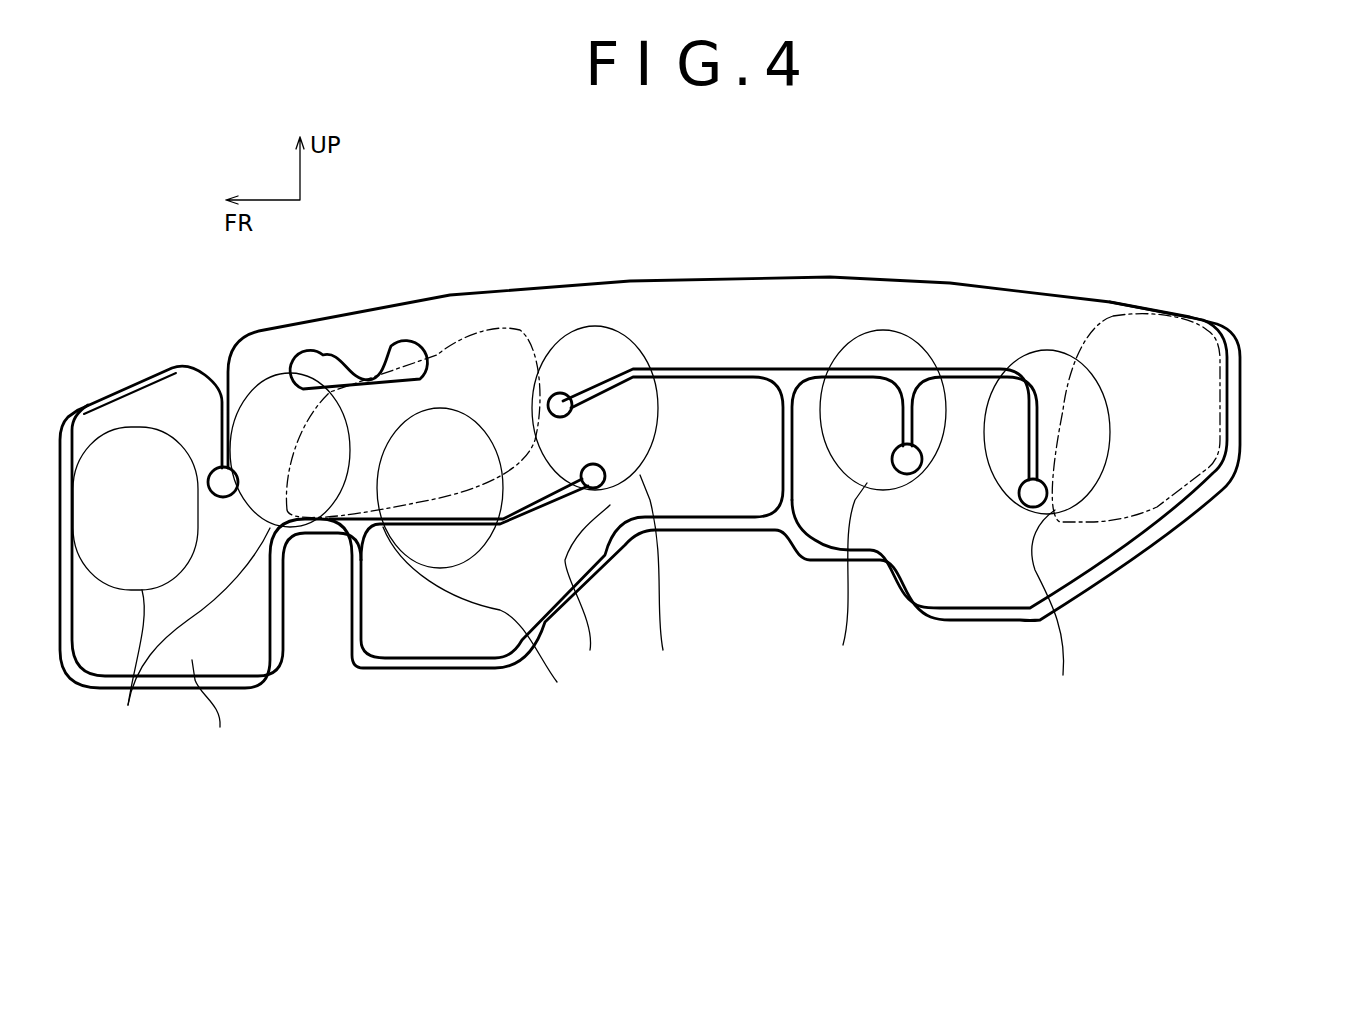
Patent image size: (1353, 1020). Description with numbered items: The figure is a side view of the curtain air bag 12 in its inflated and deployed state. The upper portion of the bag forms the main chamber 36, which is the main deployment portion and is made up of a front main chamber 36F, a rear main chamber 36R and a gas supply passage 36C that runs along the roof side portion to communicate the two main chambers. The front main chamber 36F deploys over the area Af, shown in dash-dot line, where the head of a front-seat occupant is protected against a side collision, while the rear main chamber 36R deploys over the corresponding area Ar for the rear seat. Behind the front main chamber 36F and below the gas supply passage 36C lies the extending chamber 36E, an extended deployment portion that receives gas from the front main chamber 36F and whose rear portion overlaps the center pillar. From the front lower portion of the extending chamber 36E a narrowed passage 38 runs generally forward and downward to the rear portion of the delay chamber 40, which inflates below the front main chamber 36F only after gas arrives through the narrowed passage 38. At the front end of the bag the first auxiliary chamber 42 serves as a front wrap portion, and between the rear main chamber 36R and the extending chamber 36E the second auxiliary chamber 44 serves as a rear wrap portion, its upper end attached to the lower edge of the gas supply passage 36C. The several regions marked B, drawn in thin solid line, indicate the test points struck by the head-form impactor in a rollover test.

The curtain air bag 12 is at (1161, 271).
The main chamber 36 is at (1013, 188).
The front main chamber 36F is at (513, 377).
The extending chamber 36E is at (722, 423).
The gas supply passage 36C is at (850, 297).
The rear main chamber 36R is at (1143, 377).
The narrowed passage 38 is at (588, 589).
The delay chamber 40 is at (473, 630).
The first auxiliary chamber 42 is at (216, 586).
The second auxiliary chamber 44 is at (967, 557).
The region B is at (596, 611).
The area Af is at (492, 322).
The area Ar is at (1227, 492).